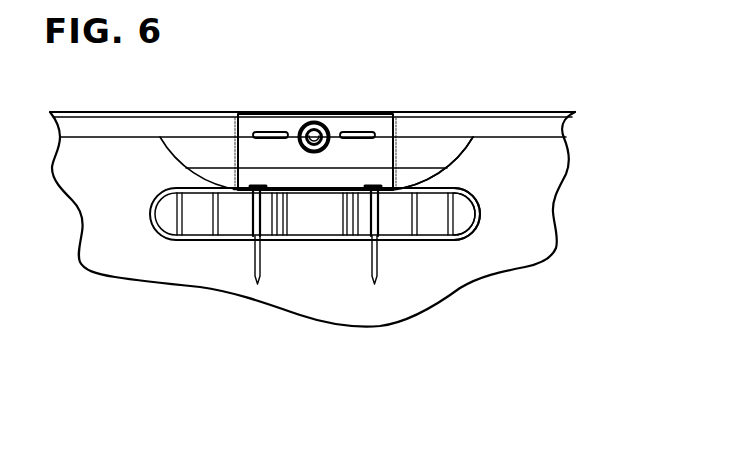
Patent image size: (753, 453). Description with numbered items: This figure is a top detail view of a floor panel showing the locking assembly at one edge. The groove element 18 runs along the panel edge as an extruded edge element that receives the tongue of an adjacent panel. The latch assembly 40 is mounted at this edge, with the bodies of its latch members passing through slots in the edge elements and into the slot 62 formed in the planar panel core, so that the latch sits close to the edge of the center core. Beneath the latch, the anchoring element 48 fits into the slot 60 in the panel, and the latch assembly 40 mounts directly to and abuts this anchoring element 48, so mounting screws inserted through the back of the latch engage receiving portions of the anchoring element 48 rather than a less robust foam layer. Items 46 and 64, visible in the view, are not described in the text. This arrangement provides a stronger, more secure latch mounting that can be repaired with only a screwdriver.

The groove element 18 is at (125, 122).
The latch assembly 40 is at (372, 125).
The pins 46 is at (368, 267).
The anchoring element 48 is at (437, 208).
The slot 60 is at (197, 233).
The slot 62 is at (453, 163).
The fastener 64 is at (318, 121).